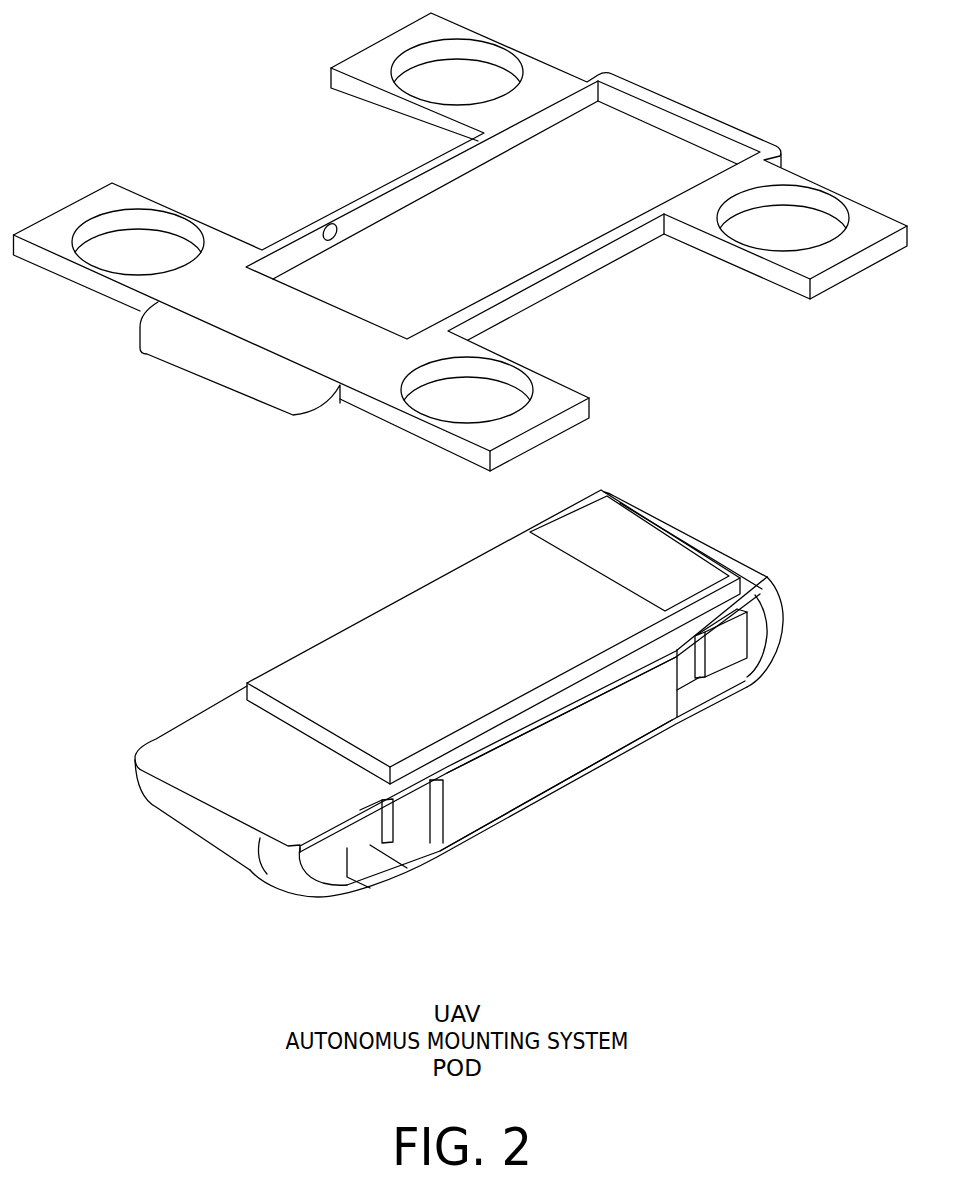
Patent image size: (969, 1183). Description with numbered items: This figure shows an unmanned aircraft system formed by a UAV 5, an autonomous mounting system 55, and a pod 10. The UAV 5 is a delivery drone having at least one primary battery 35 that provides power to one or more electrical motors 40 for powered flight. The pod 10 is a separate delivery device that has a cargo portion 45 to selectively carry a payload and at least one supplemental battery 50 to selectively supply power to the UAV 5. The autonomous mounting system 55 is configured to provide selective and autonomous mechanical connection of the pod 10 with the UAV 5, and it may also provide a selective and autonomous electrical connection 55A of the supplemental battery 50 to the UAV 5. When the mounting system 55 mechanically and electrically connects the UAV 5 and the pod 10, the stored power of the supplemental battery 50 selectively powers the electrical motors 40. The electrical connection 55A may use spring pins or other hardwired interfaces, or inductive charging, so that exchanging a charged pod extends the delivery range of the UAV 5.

The UAV 5 is at (151, 416).
The pod 10 is at (159, 874).
The primary battery 35 is at (263, 386).
The electrical motors 40 is at (467, 80).
The cargo portion 45 is at (575, 750).
The supplemental battery 50 is at (725, 654).
The autonomous mounting system 55 is at (626, 115).
The electrical connection 55A is at (359, 251).